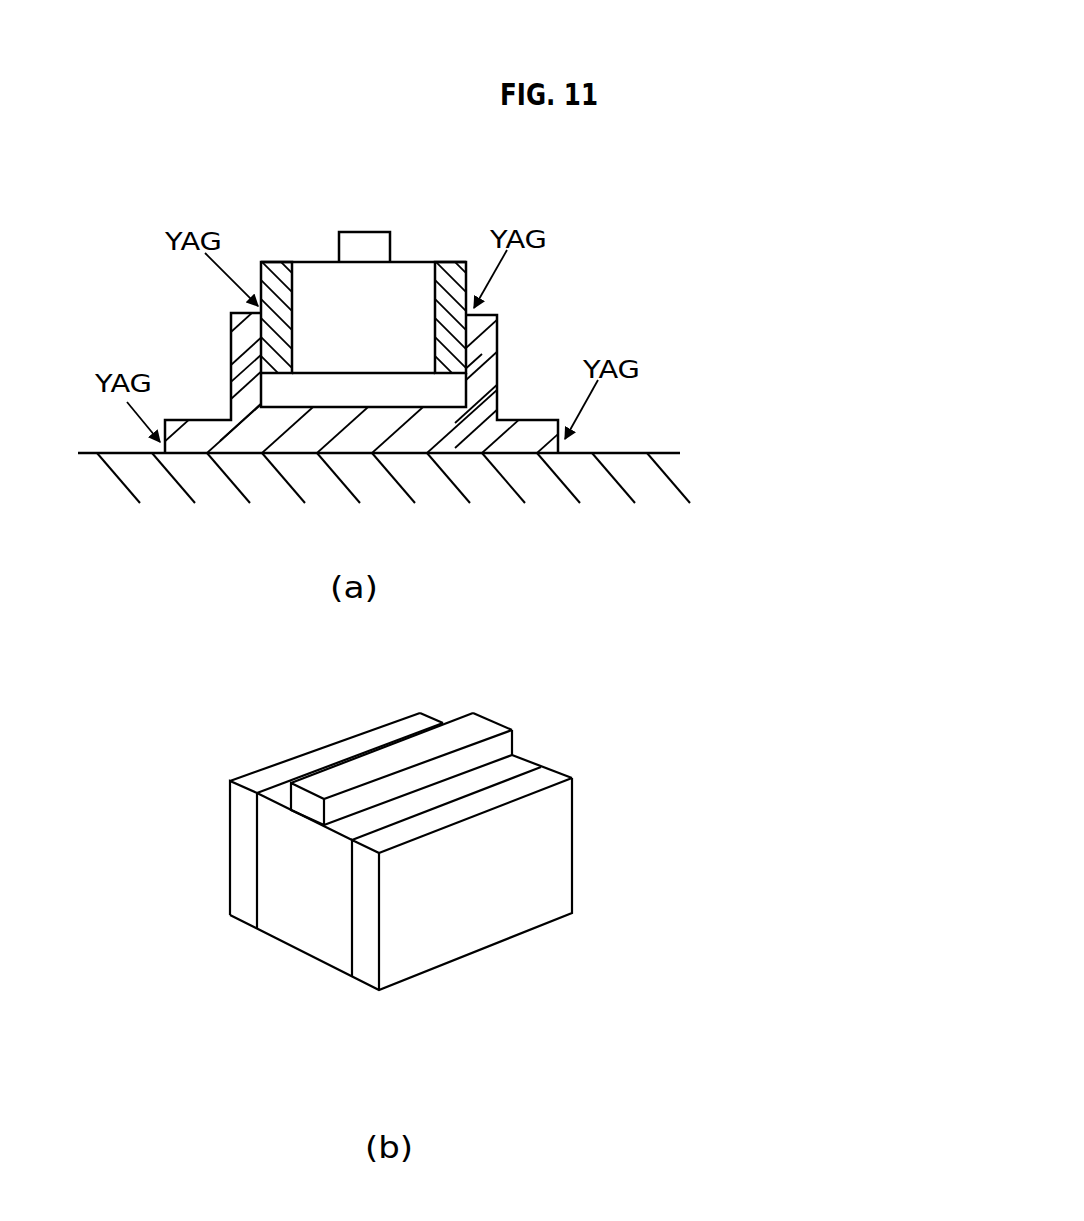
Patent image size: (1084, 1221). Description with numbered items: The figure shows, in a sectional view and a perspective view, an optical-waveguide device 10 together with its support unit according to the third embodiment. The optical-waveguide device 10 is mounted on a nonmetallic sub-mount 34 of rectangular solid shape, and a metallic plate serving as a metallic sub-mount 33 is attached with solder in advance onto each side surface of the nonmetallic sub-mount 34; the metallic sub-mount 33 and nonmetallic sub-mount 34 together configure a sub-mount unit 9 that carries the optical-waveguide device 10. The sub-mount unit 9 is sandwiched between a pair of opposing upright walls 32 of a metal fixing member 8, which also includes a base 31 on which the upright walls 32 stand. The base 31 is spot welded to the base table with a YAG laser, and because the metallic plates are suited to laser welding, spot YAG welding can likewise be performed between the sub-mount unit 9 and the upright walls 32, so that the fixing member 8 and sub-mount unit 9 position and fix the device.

The fixing member 8 is at (364, 367).
The sub-mount unit 9 is at (586, 831).
The optical-waveguide device 10 is at (365, 240).
The base 31 is at (207, 423).
The upright walls 32 is at (233, 318).
The metallic sub-mount 33 is at (280, 268).
The nonmetallic sub-mount 34 is at (325, 283).